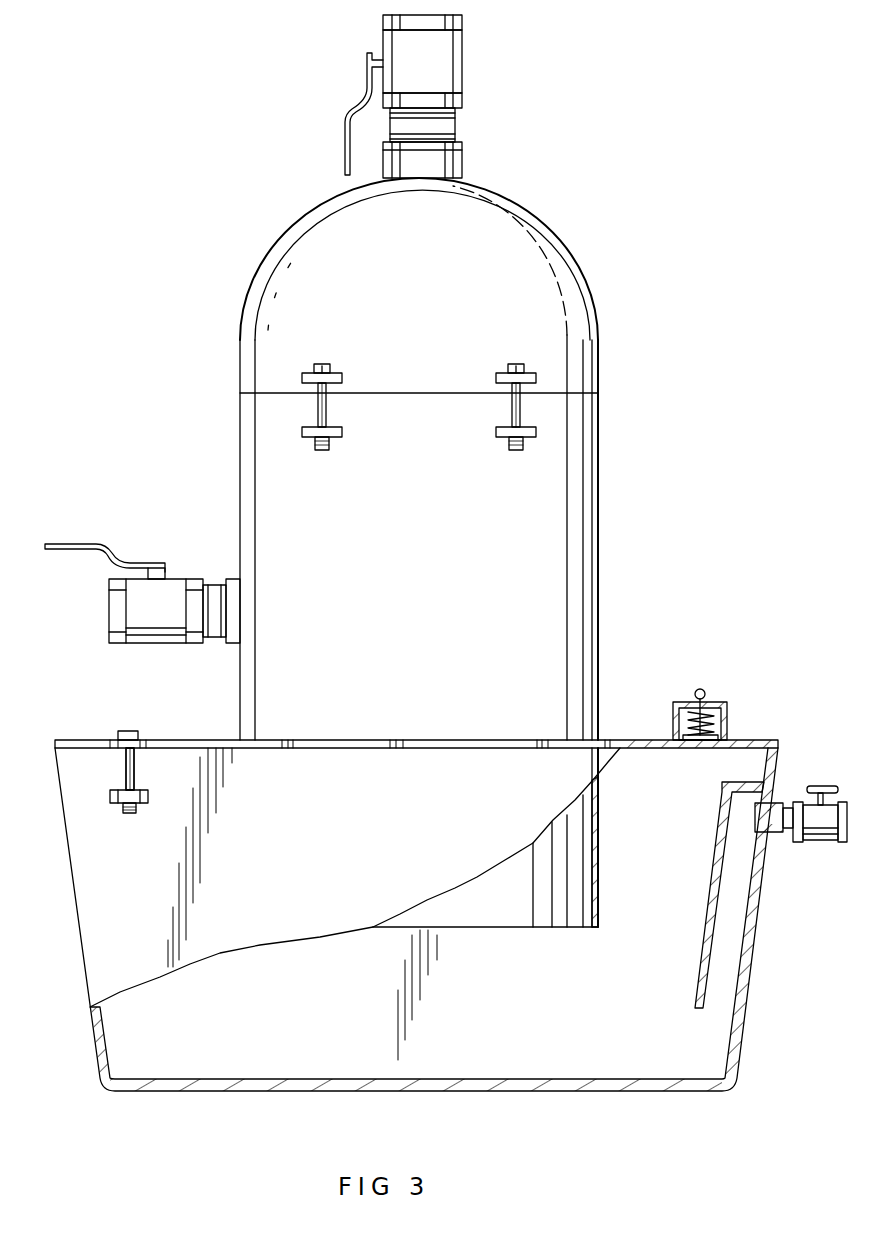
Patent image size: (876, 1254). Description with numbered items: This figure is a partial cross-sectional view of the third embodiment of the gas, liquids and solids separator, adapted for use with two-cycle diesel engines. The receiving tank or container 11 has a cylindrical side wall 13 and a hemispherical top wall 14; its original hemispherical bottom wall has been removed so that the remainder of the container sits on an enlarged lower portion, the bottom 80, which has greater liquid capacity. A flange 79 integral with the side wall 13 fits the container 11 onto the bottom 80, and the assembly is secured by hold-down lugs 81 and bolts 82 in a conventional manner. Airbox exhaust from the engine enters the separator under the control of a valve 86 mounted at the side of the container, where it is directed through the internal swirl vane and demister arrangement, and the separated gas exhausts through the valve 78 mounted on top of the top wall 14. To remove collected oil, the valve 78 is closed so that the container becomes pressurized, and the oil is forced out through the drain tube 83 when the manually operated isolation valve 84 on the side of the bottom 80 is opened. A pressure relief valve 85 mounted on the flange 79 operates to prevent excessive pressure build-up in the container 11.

The receiving tank 11 is at (568, 242).
The cylindrical side wall 13 is at (593, 700).
The hemispherical top wall 14 is at (591, 344).
The valve 78 is at (453, 70).
The flange 79 is at (205, 715).
The bottom 80 is at (97, 1052).
The hold-down lugs 81 is at (112, 797).
The bolts 82 is at (133, 790).
The drain tube 83 is at (707, 906).
The isolation valve 84 is at (830, 841).
The pressure relief valve 85 is at (726, 720).
The valve 86 is at (160, 632).